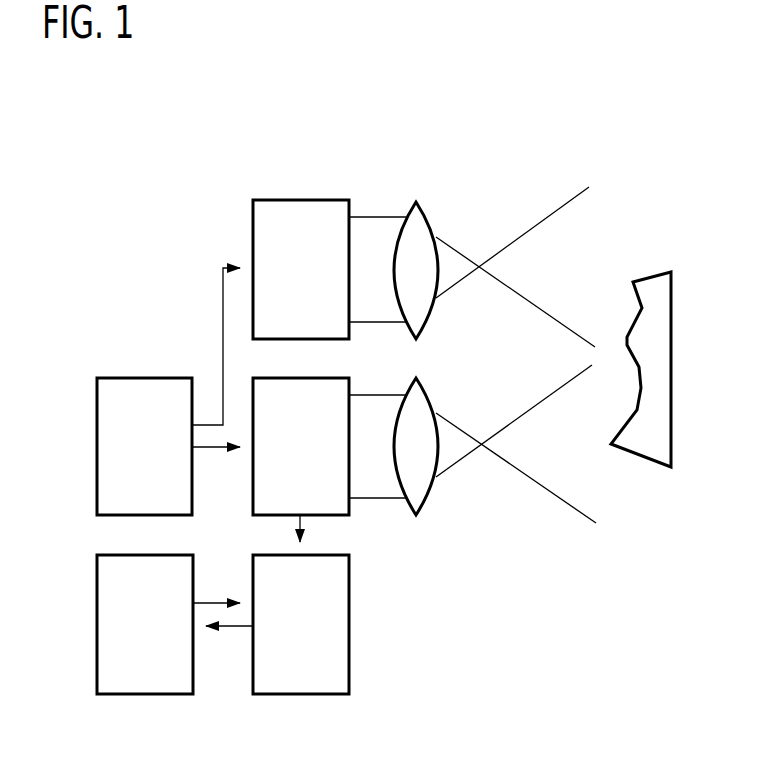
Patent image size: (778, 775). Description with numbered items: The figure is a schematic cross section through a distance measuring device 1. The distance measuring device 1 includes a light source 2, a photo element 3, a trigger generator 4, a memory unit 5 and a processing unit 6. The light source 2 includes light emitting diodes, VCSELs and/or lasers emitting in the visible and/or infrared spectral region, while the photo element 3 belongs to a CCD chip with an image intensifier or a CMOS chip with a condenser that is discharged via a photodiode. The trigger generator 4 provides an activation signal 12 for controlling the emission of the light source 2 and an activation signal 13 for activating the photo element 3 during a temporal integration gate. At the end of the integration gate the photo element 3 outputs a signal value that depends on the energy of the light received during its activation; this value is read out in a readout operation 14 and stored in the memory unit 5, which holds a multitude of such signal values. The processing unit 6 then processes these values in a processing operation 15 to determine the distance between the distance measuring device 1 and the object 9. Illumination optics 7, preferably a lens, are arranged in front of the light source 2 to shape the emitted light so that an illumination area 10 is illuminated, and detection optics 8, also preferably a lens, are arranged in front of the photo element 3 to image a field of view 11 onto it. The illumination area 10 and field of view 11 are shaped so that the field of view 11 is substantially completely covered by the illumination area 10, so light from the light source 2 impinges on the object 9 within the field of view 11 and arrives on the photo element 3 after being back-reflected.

The distance measuring device 1 is at (267, 98).
The light source 2 is at (304, 199).
The photo element 3 is at (322, 378).
The trigger generator 4 is at (97, 449).
The memory unit 5 is at (349, 622).
The processing unit 6 is at (97, 624).
The illumination optics 7 is at (429, 219).
The detection optics 8 is at (429, 501).
The object 9 is at (671, 364).
The illumination area 10 is at (563, 203).
The field of view 11 is at (519, 411).
The activation signal 12 is at (223, 326).
The activation signal 13 is at (228, 449).
The readout operation 14 is at (302, 527).
The processing operation 15 is at (230, 628).